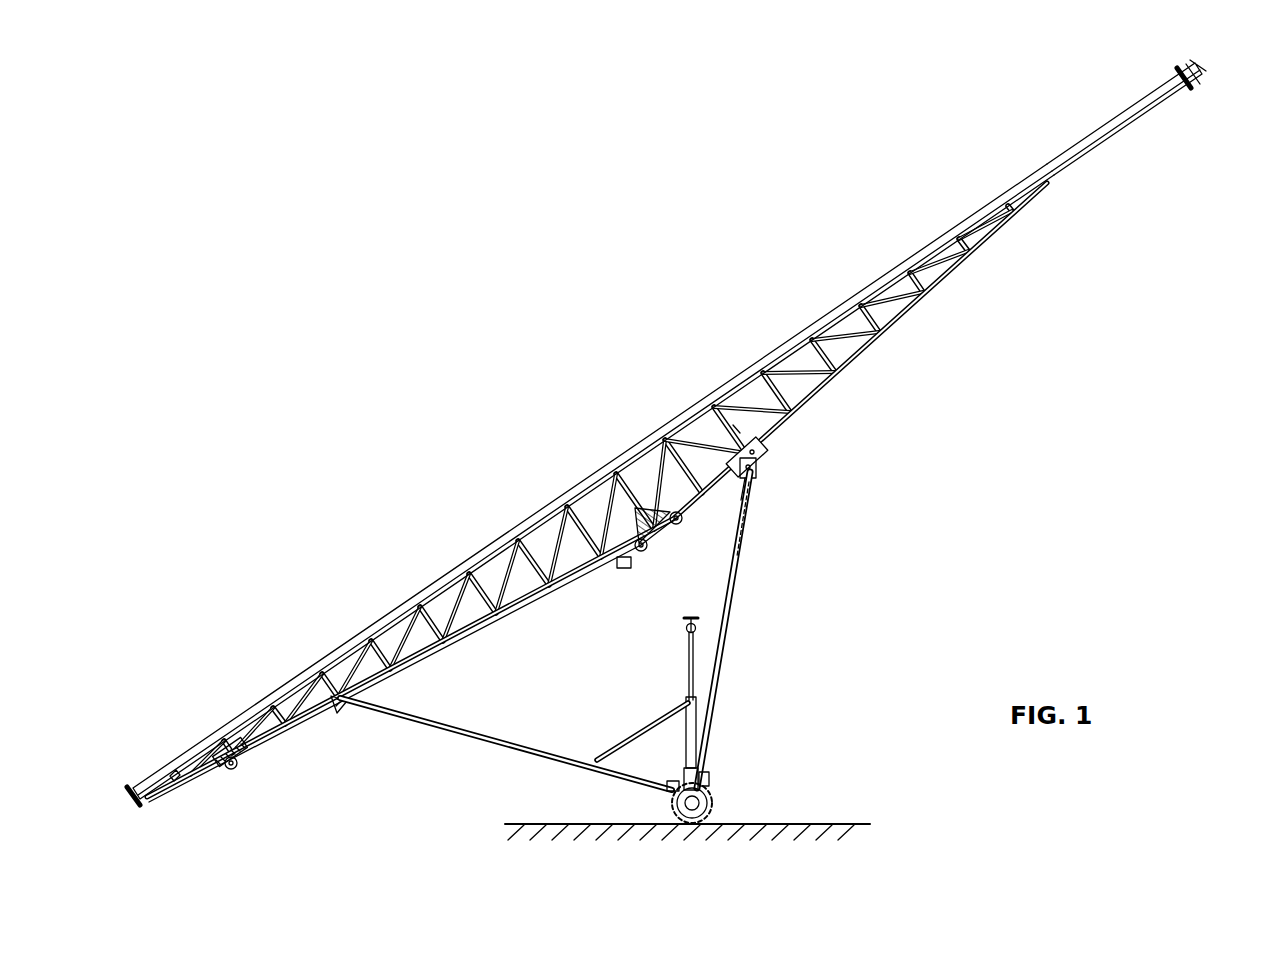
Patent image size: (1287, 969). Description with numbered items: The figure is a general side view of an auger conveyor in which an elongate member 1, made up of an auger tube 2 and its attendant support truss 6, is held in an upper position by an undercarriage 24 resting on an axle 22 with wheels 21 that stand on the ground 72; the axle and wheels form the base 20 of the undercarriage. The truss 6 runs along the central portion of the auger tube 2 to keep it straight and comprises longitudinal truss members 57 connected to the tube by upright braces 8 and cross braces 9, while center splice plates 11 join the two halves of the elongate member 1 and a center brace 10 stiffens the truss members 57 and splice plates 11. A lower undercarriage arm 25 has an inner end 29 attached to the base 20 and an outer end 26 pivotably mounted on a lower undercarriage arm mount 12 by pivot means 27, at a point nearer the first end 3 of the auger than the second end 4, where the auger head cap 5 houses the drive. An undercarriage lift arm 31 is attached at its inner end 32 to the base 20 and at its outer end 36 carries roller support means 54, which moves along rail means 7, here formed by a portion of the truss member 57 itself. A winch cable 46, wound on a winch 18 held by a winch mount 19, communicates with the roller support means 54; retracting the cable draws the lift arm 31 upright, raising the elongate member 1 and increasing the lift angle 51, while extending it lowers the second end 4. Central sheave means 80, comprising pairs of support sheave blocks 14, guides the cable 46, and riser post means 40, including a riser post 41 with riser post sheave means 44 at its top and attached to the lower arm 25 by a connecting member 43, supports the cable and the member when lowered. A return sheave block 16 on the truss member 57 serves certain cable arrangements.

The elongate member 1 is at (470, 510).
The auger tube 2 is at (300, 684).
The first end 3 is at (148, 790).
The second end 4 is at (1157, 98).
The auger head cap 5 is at (1200, 80).
The support truss 6 is at (828, 392).
The rail means 7 is at (800, 405).
The upright braces 8 is at (730, 428).
The cross braces 9 is at (746, 412).
The center brace 10 is at (652, 500).
The center splice plates 11 is at (630, 500).
The lower undercarriage arm mount 12 is at (342, 695).
The support sheave blocks 14 is at (680, 523).
The return sheave block 16 is at (620, 568).
The winch 18 is at (238, 768).
The winch mount 19 is at (217, 767).
The base 20 is at (806, 810).
The wheels 21 is at (718, 808).
The axle 22 is at (705, 795).
The undercarriage 24 is at (775, 600).
The lower undercarriage arm 25 is at (432, 722).
The outer end 26 is at (350, 712).
The pivot means 27 is at (331, 718).
The inner end 29 is at (668, 788).
The undercarriage lift arm 31 is at (727, 647).
The inner end 32 is at (706, 778).
The outer end 36 is at (762, 472).
The riser post means 40 is at (616, 630).
The riser post 41 is at (686, 664).
The connecting member 43 is at (650, 725).
The riser post sheave means 44 is at (685, 630).
The winch cable 46 is at (494, 632).
The lift angle 51 is at (740, 510).
The roller support means 54 is at (775, 447).
The longitudinal truss members 57 is at (858, 362).
The ground 72 is at (828, 826).
The central sheave means 80 is at (646, 580).